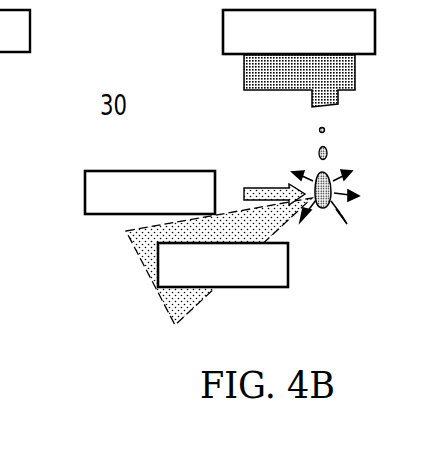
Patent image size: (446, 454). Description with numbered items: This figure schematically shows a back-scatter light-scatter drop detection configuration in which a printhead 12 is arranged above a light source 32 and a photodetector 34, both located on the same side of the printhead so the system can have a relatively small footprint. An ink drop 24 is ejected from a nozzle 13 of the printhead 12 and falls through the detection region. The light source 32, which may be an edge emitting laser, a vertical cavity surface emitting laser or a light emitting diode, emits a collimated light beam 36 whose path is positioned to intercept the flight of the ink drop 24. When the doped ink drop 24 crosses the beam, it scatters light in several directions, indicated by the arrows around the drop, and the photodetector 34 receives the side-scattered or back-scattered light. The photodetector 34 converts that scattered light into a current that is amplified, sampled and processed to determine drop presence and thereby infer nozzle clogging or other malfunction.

The printhead 12 is at (223, 28).
The nozzle 13 is at (330, 106).
The ink drop 24 is at (328, 170).
The light source 32 is at (85, 192).
The photodetector 34 is at (245, 288).
The light beam 36 is at (262, 190).